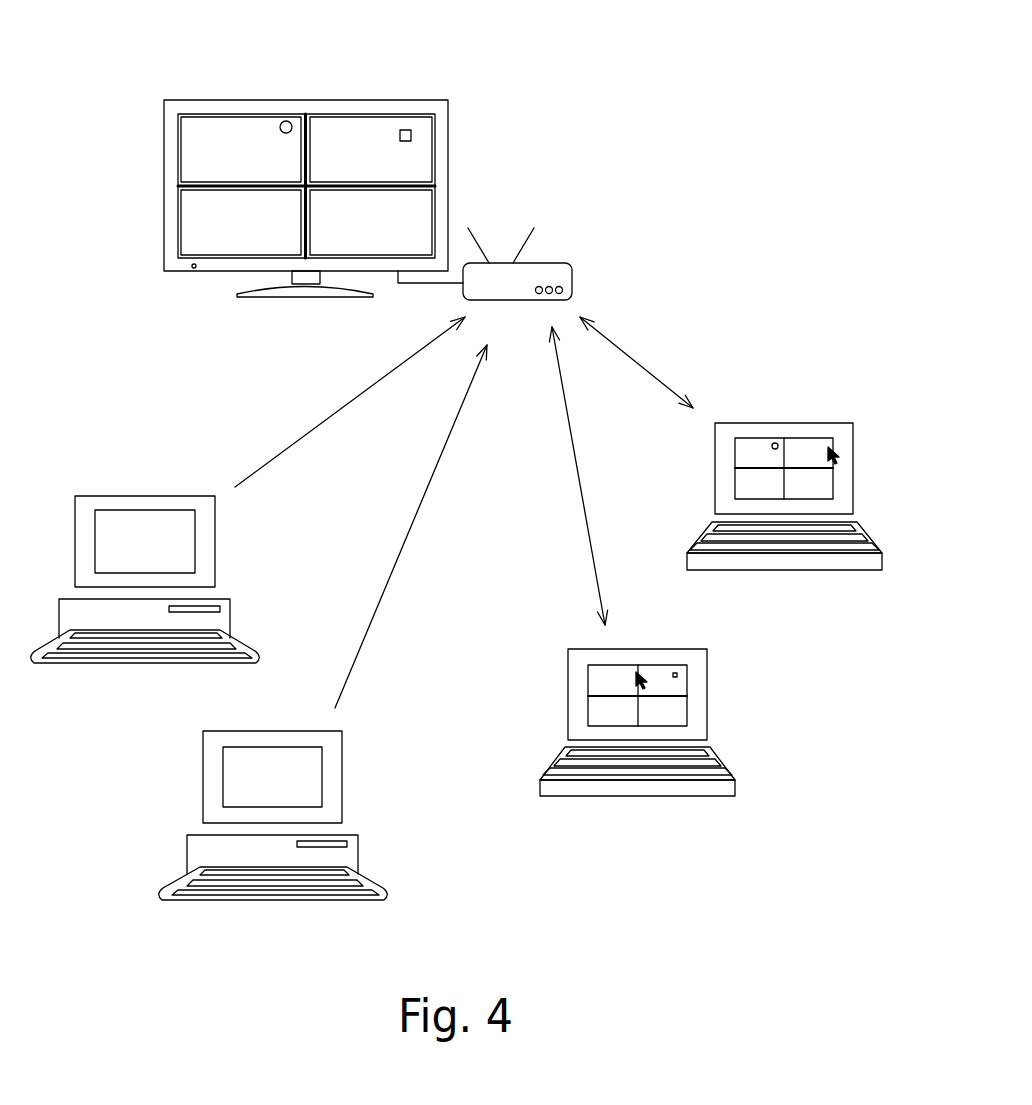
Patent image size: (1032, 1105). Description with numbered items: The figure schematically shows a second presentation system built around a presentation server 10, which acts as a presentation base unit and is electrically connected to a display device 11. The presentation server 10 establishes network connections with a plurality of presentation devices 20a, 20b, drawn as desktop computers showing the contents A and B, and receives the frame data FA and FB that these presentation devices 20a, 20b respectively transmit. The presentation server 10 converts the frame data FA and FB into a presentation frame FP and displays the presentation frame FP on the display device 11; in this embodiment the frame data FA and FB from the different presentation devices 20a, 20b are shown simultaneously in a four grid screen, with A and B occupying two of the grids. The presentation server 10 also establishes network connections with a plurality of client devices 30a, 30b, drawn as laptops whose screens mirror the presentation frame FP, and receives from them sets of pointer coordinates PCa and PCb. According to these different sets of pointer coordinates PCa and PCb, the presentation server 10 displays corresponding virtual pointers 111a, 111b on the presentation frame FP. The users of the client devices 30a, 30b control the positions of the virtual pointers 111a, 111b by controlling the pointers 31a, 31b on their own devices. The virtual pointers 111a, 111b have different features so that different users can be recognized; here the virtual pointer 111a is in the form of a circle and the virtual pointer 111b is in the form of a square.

The presentation server 10 is at (548, 263).
The display device 11 is at (419, 359).
The virtual pointer 111a is at (286, 120).
The virtual pointer 111b is at (403, 130).
The presentation device 20a is at (105, 496).
The presentation device 20b is at (295, 731).
The client device 30a is at (700, 703).
The client device 30b is at (817, 423).
The pointer 31a is at (638, 672).
The pointer 31b is at (832, 450).
The presentation frame FP is at (190, 155).
The frame data FA is at (350, 402).
The frame data FB is at (411, 526).
The pointer coordinates PCa is at (599, 476).
The pointer coordinates PCb is at (649, 362).